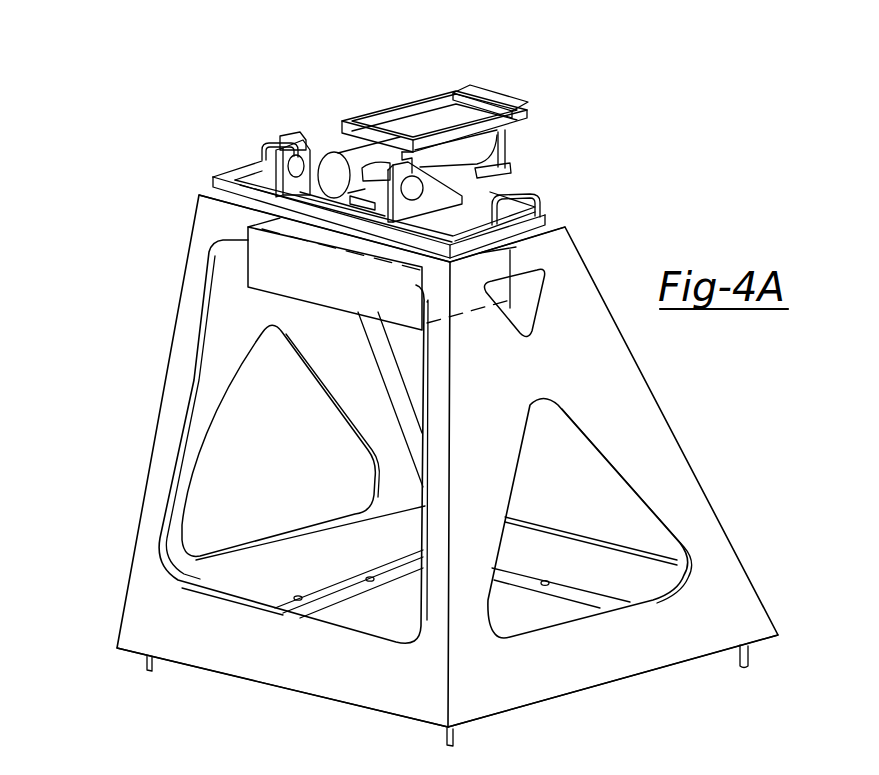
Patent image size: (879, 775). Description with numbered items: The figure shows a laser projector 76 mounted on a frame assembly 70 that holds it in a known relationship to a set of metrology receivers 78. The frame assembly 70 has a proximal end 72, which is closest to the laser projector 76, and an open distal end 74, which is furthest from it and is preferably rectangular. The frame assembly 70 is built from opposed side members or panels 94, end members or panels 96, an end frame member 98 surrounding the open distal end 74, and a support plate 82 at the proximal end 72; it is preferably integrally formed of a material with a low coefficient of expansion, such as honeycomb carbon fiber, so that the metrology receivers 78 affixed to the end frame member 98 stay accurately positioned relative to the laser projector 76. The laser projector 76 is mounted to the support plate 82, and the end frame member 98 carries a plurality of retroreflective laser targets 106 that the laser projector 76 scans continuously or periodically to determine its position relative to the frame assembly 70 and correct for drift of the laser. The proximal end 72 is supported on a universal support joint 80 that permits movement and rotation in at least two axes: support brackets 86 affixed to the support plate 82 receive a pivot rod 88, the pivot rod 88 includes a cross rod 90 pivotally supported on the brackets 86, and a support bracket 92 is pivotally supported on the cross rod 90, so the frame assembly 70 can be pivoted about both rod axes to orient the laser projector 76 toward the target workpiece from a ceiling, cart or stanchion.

The frame assembly 70 is at (138, 435).
The proximal end 72 is at (205, 212).
The open distal end 74 is at (313, 698).
The laser projector 76 is at (280, 275).
The metrology receivers 78 is at (147, 662).
The universal support joint 80 is at (459, 63).
The support plate 82 is at (220, 185).
The support brackets 86 is at (296, 152).
The pivot rod 88 is at (312, 163).
The cross rod 90 is at (377, 153).
The support bracket 92 is at (498, 82).
The side panels 94 is at (148, 603).
The end panels 96 is at (640, 428).
The end frame member 98 is at (580, 594).
The retroreflective laser targets 106 is at (370, 577).